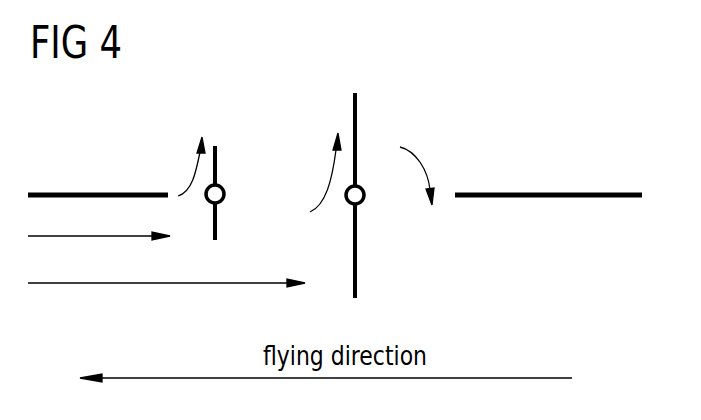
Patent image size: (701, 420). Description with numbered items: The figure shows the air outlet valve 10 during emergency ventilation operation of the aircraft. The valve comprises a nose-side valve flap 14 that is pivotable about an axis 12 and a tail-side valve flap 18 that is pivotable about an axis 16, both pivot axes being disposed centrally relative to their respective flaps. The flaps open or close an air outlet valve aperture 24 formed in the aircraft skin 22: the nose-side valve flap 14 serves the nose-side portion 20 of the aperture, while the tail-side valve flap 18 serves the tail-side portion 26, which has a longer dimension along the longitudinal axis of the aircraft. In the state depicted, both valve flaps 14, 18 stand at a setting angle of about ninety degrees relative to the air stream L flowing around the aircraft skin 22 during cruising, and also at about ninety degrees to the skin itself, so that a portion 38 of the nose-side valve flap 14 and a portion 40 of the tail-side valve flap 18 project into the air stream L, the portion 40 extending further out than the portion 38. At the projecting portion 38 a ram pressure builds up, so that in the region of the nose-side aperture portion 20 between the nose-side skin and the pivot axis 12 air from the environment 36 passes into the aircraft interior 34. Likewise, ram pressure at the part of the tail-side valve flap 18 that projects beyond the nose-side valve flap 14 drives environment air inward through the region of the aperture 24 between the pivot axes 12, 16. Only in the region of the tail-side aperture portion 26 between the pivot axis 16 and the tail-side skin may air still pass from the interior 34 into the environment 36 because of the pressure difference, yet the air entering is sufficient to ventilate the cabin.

The air outlet valve 10 is at (520, 113).
The pivot axis of the nose-side valve flap 12 is at (225, 190).
The nose-side valve flap 14 is at (218, 153).
The pivot axis of the tail-side valve flap 16 is at (365, 188).
The tail-side valve flap 18 is at (360, 108).
The nose-side portion of the air outlet valve aperture 20 is at (232, 208).
The aircraft skin 22 is at (80, 192).
The air outlet valve aperture 24 is at (272, 203).
The tail-side portion of the air outlet valve aperture 26 is at (386, 195).
The aircraft interior 34 is at (573, 171).
The environment around the aircraft 36 is at (573, 260).
The portion of the nose-side valve flap 38 is at (212, 225).
The portion of the tail-side valve flap 40 is at (358, 281).
The air stream L is at (98, 285).